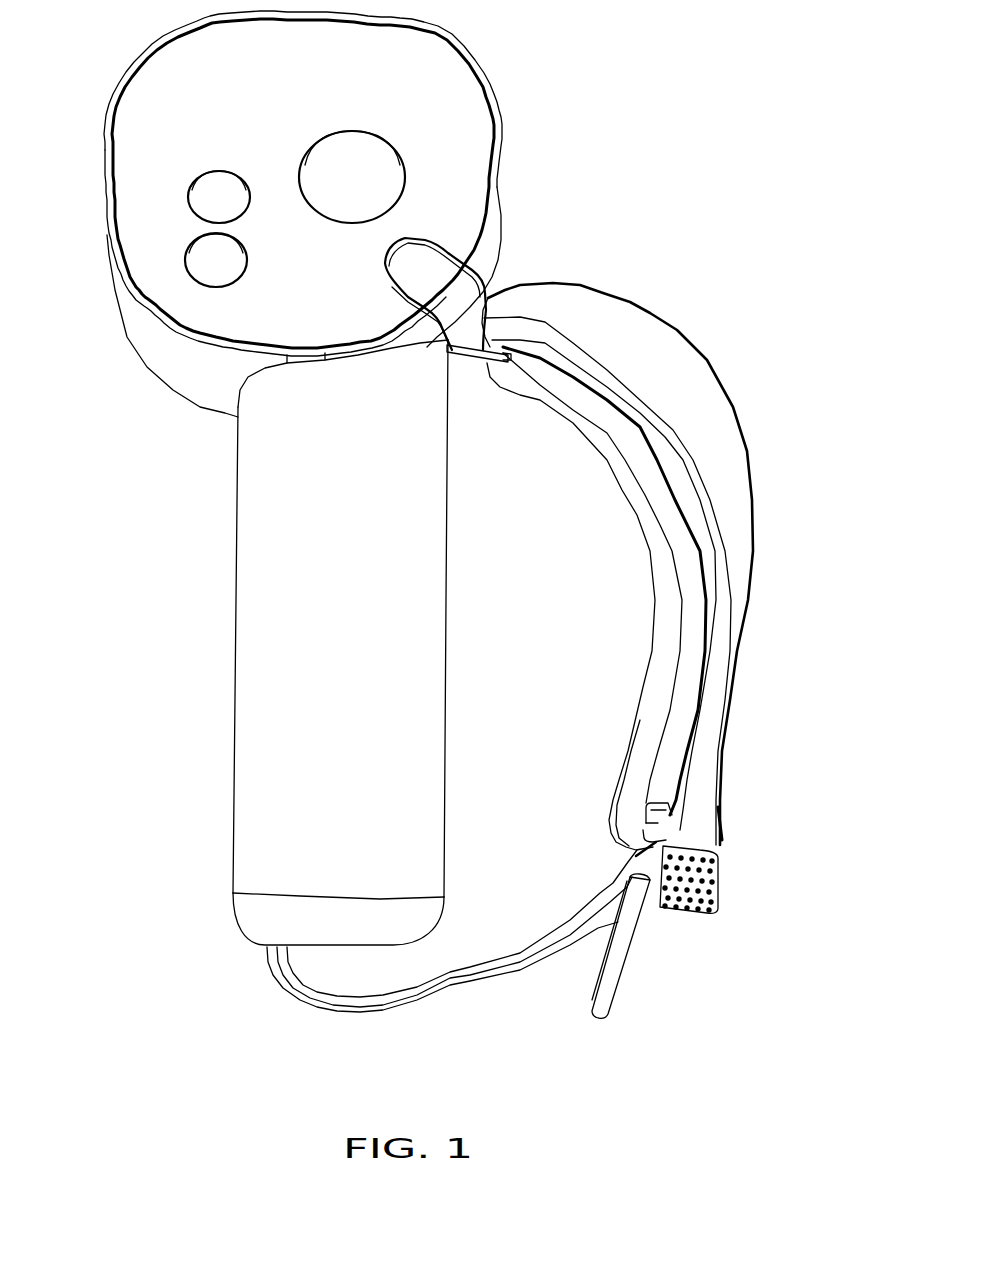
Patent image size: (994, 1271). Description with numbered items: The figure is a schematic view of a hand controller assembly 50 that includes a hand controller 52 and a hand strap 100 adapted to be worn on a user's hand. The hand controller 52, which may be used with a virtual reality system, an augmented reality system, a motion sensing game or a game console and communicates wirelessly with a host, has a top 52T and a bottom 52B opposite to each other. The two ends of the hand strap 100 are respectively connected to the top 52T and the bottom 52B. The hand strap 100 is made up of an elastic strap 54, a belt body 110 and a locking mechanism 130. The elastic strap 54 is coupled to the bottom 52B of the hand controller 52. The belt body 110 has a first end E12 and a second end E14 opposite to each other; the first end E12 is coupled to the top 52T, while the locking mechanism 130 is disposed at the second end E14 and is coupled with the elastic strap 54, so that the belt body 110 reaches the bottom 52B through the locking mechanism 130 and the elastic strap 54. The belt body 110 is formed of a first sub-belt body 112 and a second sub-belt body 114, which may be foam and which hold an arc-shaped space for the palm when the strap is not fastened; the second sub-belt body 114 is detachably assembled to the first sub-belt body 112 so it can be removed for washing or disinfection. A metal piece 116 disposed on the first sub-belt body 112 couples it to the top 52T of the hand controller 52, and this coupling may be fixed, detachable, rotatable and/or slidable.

The hand controller assembly 50 is at (812, 1086).
The hand controller 52 is at (233, 590).
The top 52T is at (272, 214).
The bottom 52B is at (305, 783).
The hand strap 100 is at (825, 193).
The belt body 110 is at (730, 243).
The first sub-belt body 112 is at (633, 335).
The second sub-belt body 114 is at (620, 437).
The metal piece 116 is at (435, 263).
The locking mechanism 130 is at (729, 527).
The elastic strap 54 is at (517, 608).
The first end E12 is at (505, 303).
The second end E14 is at (697, 792).